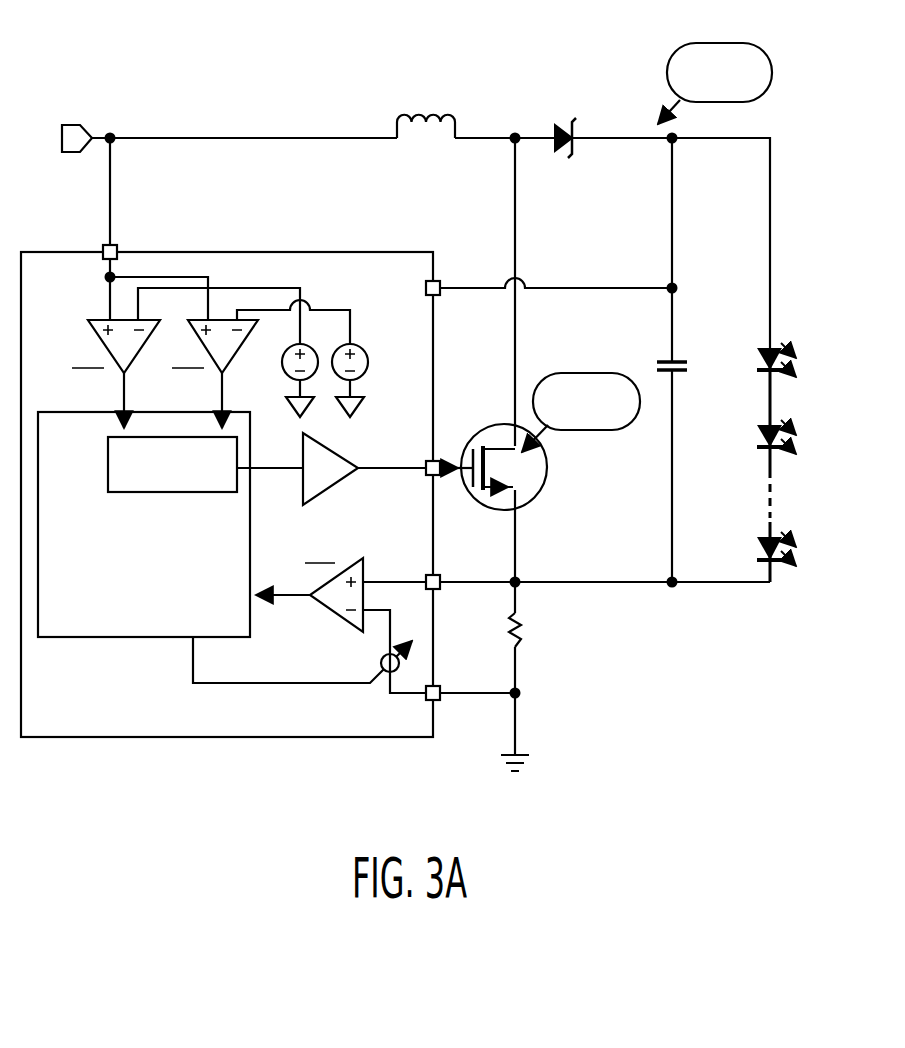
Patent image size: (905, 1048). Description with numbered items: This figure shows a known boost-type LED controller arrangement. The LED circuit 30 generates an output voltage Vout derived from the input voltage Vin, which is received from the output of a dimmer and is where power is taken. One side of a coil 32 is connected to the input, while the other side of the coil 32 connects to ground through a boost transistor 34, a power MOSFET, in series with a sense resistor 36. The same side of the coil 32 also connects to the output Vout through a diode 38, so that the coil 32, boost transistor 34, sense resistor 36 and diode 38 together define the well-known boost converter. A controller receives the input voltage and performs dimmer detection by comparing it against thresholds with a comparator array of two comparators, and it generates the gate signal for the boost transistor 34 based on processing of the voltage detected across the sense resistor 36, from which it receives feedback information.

The LED circuit 30 is at (528, 92).
The coil 32 is at (408, 115).
The boost transistor 34 is at (545, 492).
The sense resistor 36 is at (520, 650).
The diode 38 is at (565, 120).